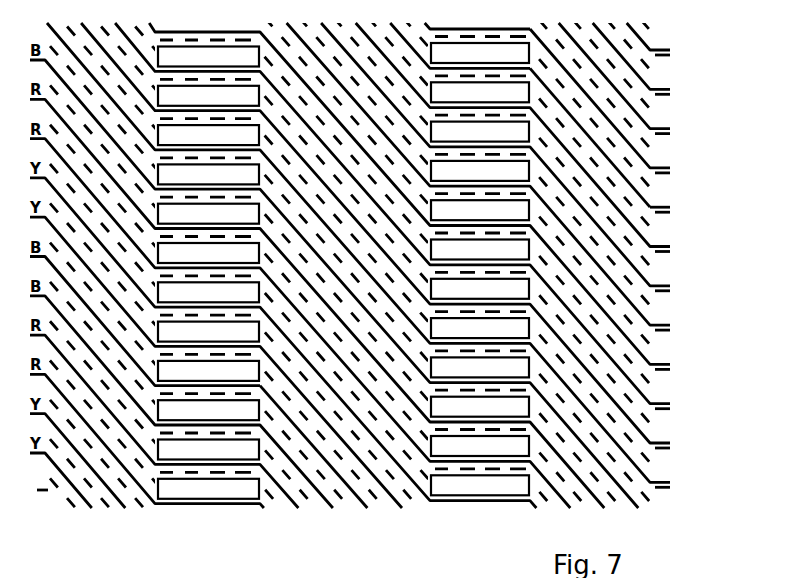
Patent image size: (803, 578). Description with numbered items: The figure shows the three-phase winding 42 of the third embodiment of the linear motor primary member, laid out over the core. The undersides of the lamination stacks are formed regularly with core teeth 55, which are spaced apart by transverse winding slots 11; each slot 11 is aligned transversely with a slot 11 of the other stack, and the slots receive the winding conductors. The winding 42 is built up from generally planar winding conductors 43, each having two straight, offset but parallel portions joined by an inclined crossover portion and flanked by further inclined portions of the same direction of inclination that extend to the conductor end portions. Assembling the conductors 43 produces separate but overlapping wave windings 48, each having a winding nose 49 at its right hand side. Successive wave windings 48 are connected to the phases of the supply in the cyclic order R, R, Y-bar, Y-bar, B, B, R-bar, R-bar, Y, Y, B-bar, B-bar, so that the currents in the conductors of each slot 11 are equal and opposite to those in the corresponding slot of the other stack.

The transverse winding slot 11 is at (505, 432).
The three-phase winding 42 is at (361, 506).
The winding conductor 43 is at (650, 200).
The wave winding 48 is at (660, 158).
The winding nose 49 is at (659, 214).
The core tooth 55 is at (445, 448).